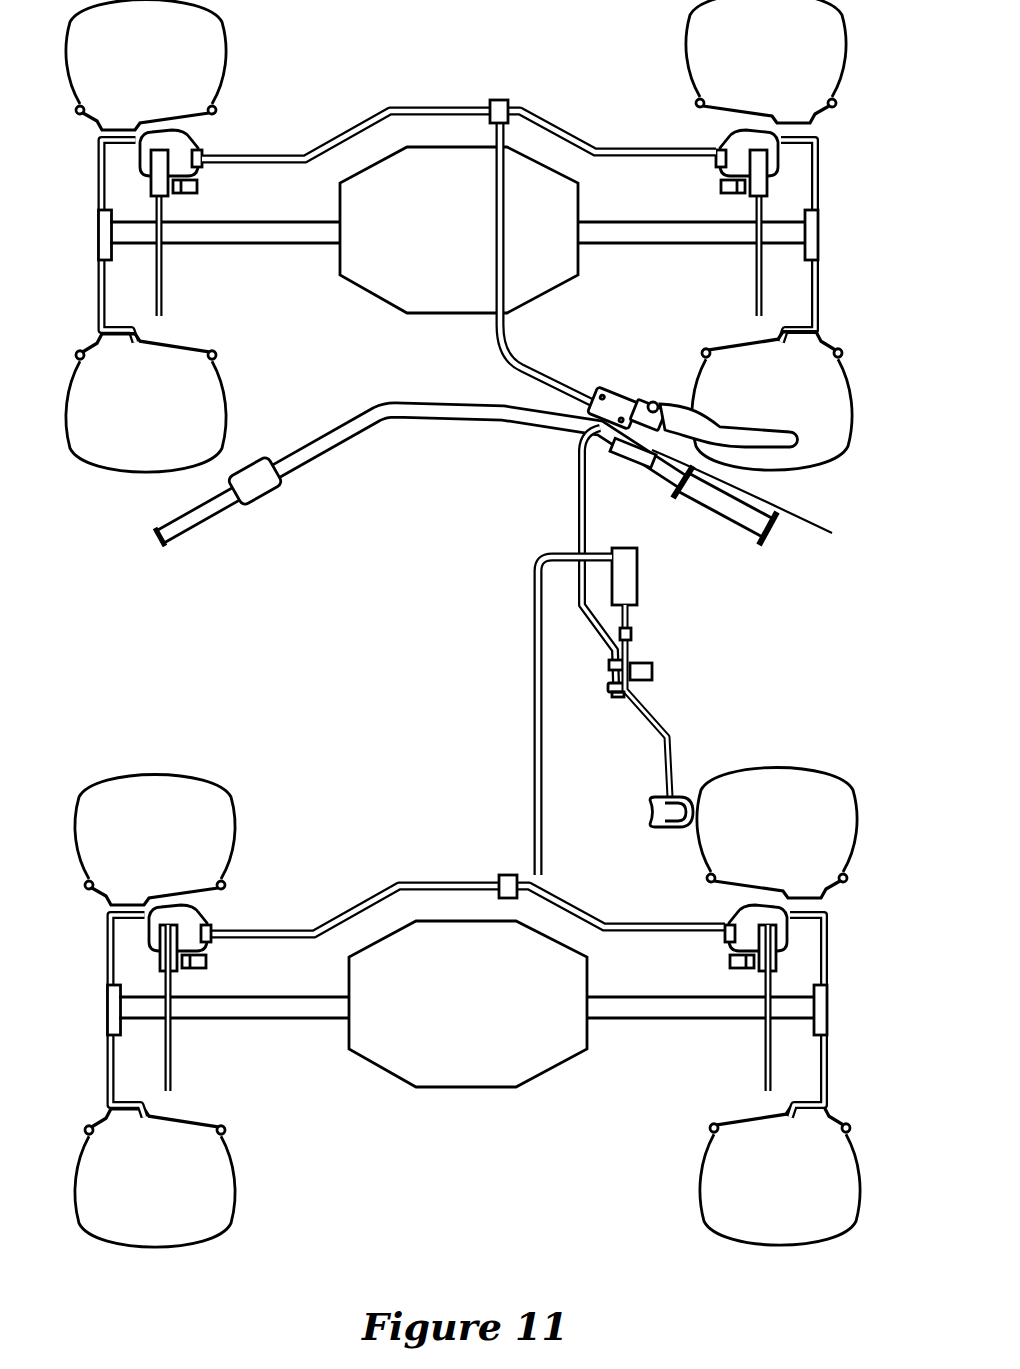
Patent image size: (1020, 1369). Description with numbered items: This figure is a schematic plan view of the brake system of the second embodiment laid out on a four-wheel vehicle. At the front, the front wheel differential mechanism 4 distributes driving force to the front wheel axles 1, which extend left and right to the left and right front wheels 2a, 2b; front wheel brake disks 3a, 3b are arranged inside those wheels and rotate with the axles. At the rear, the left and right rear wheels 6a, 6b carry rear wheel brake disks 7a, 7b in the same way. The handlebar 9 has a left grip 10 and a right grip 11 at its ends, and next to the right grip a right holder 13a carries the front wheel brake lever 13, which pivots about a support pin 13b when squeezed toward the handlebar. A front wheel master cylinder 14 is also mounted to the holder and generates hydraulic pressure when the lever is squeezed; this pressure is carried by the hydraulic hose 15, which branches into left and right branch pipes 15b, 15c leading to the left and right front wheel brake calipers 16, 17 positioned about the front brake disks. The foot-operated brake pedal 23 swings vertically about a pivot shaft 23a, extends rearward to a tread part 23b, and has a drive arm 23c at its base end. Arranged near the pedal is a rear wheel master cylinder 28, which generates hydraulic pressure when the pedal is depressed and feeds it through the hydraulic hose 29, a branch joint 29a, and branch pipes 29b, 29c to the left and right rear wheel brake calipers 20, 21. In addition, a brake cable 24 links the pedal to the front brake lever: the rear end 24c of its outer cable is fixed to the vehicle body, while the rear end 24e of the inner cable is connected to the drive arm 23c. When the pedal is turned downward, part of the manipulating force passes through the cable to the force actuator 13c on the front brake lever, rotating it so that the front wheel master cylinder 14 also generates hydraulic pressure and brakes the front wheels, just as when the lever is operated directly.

The front wheel axle 1 is at (255, 246).
The left front wheel 2a is at (80, 458).
The right front wheel 2b is at (848, 425).
The front wheel brake disk 3a is at (163, 306).
The front wheel brake disk 3b is at (758, 300).
The front wheel differential mechanism 4 is at (395, 298).
The left rear wheel 6a is at (117, 763).
The right rear wheel 6b is at (826, 762).
The rear wheel brake disk 7a is at (172, 1068).
The rear wheel brake disk 7b is at (766, 1058).
The handlebar 9 is at (516, 422).
The left grip 10 is at (196, 520).
The right grip 11 is at (728, 522).
The front wheel brake lever 13 is at (752, 432).
The right holder 13a is at (617, 463).
The support pin 13b is at (652, 400).
The force actuator 13c is at (771, 500).
The front wheel master cylinder 14 is at (612, 392).
The hydraulic hose 15 is at (508, 330).
The left branch pipe 15b is at (337, 118).
The right branch pipe 15c is at (603, 135).
The left front wheel brake caliper 16 is at (185, 140).
The right front wheel brake caliper 17 is at (720, 130).
The left rear wheel brake caliper 20 is at (212, 945).
The right rear wheel brake caliper 21 is at (722, 938).
The brake pedal 23 is at (662, 712).
The pivot shaft 23a is at (652, 668).
The tread part 23b is at (690, 793).
The drive arm 23c is at (620, 700).
The brake cable 24 is at (575, 513).
The rear end of outer cable 24c is at (612, 673).
The rear end of inner cable 24e is at (610, 688).
The rear wheel master cylinder 28 is at (638, 592).
The hydraulic hose 29 is at (534, 700).
The branch joint 29a is at (532, 876).
The left branch pipe 29b is at (374, 885).
The right branch pipe 29c is at (605, 910).